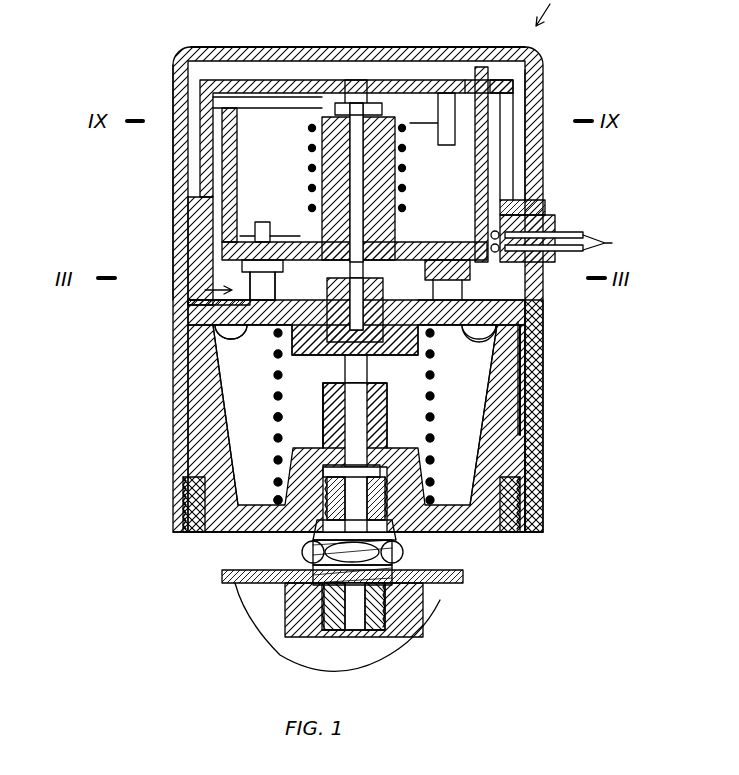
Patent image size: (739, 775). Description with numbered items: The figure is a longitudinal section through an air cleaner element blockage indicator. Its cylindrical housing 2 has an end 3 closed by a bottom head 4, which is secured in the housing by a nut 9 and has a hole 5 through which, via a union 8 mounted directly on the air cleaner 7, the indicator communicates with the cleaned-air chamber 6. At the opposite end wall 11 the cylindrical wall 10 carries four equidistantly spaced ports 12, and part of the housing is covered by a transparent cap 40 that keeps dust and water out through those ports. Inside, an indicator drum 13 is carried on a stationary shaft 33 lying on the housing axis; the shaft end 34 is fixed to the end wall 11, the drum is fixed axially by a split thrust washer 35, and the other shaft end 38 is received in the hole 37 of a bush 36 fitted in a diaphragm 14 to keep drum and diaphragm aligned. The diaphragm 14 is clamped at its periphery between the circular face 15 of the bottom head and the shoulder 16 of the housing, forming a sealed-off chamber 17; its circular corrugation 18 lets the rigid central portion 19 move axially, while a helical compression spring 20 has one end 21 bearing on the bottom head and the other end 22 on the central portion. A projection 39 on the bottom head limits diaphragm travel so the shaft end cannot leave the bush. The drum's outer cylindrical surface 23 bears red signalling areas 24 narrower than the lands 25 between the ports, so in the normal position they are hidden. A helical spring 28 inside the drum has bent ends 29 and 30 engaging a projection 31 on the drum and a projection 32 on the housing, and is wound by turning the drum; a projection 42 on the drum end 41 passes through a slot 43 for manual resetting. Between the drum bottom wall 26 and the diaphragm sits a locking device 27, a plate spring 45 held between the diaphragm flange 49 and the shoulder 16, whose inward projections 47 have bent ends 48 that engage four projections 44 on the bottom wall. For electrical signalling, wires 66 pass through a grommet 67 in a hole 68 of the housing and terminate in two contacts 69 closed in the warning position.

The indicator housing 2 is at (530, 447).
The end of the indicator housing 3 is at (522, 533).
The bottom head 4 is at (500, 450).
The hole 5 is at (340, 345).
The cleaned-air chamber 6 is at (428, 628).
The air cleaner 7 is at (448, 583).
The union 8 is at (305, 540).
The nut 9 is at (510, 533).
The cylindrical wall 10 is at (528, 92).
The end wall 11 is at (540, 68).
The ports 12 is at (530, 148).
The indicator drum 13 is at (508, 175).
The diaphragm 14 is at (455, 328).
The circular face 15 is at (535, 362).
The shoulder 16 is at (535, 302).
The sealed-off chamber 17 is at (192, 385).
The circular corrugation 18 is at (185, 352).
The rigid central portion 19 is at (330, 360).
The helical compression spring 20 is at (274, 418).
The end of the spring 21 is at (275, 505).
The end of the spring 22 is at (276, 335).
The outer cylindrical surface 23 is at (200, 240).
The signalling areas 24 is at (205, 180).
The lands 25 is at (198, 138).
The bottom wall 26 is at (210, 290).
The locking device 27 is at (195, 300).
The helical spring 28 is at (310, 130).
The end of the helical spring 29 is at (455, 130).
The end of the helical spring 30 is at (252, 235).
The projection on the indicator drum 31 is at (270, 232).
The projection on the indicator housing 32 is at (450, 150).
The stationary shaft 33 is at (385, 133).
The end of the shaft 34 is at (362, 85).
The split thrust washer 35 is at (433, 282).
The bush 36 is at (380, 335).
The hole in the bush 37 is at (362, 345).
The end of the shaft 38 is at (302, 280).
The projection of the bottom head 39 is at (380, 420).
The transparent cap 40 is at (268, 48).
The end of the indicator drum 41 is at (178, 92).
The projection 42 is at (482, 68).
The slot 43 is at (468, 90).
The projections 44 is at (470, 265).
The plate spring 45 is at (200, 318).
The projections 47 is at (492, 340).
The ends of the projections 48 is at (228, 327).
The flange 49 is at (535, 326).
The electrical wires 66 is at (606, 243).
The grommet 67 is at (550, 222).
The hole 68 is at (535, 265).
The contacts 69 is at (490, 234).